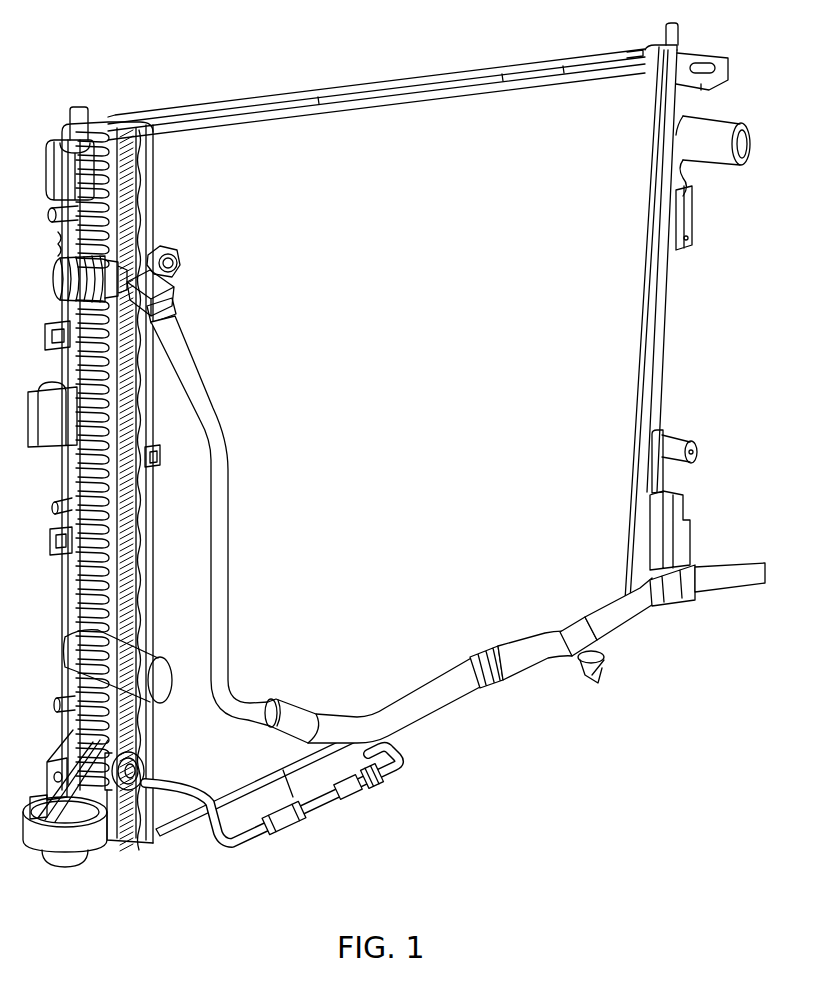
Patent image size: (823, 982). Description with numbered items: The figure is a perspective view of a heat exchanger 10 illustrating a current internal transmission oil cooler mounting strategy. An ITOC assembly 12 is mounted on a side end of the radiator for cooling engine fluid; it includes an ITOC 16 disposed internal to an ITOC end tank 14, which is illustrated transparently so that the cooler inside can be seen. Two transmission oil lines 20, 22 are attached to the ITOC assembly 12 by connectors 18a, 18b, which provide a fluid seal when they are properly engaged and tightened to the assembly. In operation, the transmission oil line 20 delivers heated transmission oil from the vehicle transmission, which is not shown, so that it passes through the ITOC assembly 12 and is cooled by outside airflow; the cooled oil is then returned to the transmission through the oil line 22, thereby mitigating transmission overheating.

The heat exchanger 10 is at (146, 80).
The ITOC assembly 12 is at (42, 316).
The ITOC end tank 14 is at (68, 660).
The ITOC 16 is at (100, 492).
The connector 18a is at (62, 258).
The connector 18b is at (118, 795).
The transmission oil line 20 is at (537, 652).
The oil line 22 is at (235, 840).